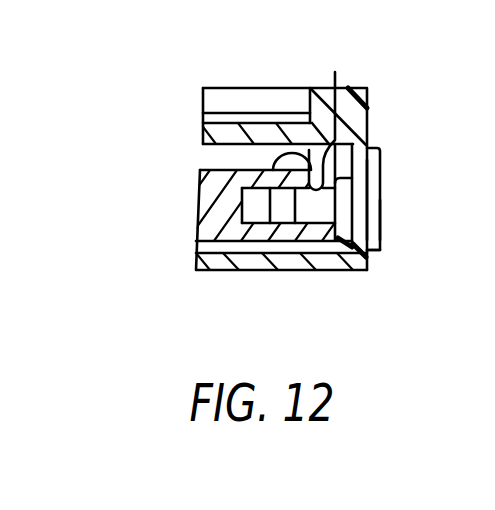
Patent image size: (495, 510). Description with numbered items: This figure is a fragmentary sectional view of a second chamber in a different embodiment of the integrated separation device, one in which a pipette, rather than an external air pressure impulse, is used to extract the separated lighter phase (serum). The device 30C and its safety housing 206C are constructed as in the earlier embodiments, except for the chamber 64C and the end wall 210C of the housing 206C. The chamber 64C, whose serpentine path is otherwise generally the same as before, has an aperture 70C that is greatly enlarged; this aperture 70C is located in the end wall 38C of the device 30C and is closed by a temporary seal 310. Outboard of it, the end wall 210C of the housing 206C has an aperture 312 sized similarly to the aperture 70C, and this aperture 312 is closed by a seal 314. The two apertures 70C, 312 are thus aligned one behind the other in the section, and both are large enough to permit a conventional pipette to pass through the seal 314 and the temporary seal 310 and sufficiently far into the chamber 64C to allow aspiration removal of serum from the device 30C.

The safety housing 206C is at (186, 137).
The aperture 70C is at (339, 115).
The end wall 210C is at (371, 119).
The aperture 312 is at (381, 180).
The temporary seal 310 is at (382, 208).
The end wall 38C is at (382, 226).
The seal 314 is at (383, 250).
The chamber 64C is at (240, 203).
The device 30C is at (288, 247).